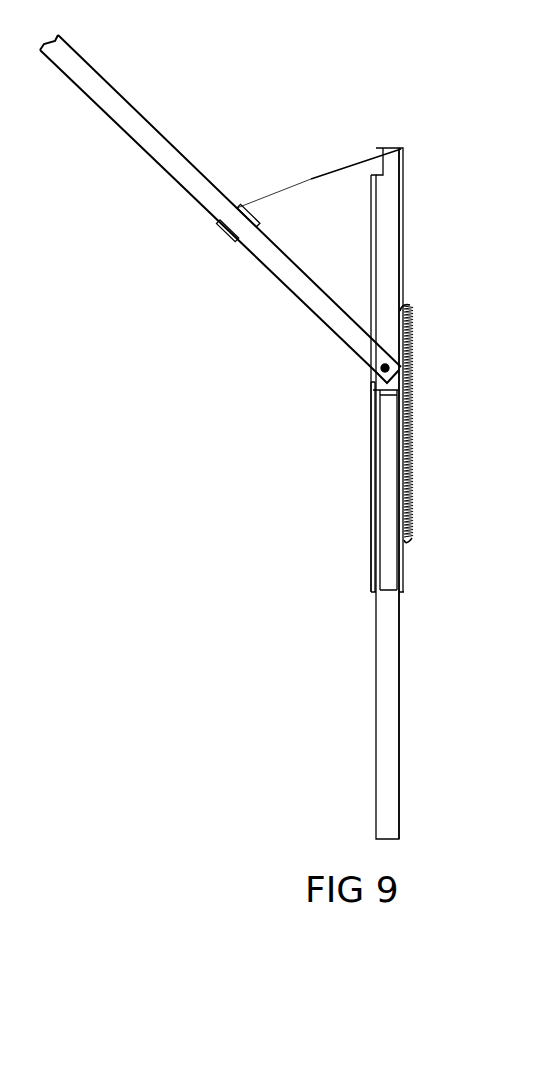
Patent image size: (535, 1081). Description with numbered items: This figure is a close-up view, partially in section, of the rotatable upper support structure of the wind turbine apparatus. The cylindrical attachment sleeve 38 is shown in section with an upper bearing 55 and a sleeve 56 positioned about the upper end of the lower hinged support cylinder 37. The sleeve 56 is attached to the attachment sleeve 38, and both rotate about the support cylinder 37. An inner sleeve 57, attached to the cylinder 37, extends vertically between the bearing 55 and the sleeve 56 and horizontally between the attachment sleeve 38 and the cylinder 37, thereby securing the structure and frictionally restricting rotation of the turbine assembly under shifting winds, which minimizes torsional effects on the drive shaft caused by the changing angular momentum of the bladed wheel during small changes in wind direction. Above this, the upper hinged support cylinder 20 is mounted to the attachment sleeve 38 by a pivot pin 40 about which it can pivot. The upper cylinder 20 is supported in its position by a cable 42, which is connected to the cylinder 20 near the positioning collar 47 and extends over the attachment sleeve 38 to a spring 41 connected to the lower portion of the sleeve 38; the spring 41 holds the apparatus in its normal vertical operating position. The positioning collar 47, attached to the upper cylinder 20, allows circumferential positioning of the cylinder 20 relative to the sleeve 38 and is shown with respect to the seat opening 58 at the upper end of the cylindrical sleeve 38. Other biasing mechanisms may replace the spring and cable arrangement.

The upper hinged support cylinder 20 is at (126, 98).
The cable 42 is at (311, 178).
The seat opening 58 is at (380, 150).
The positioning collar 47 is at (223, 232).
The pivot pin 40 is at (381, 368).
The upper bearing 55 is at (373, 394).
The spring 41 is at (403, 468).
The hinged attachment sleeve 38 is at (368, 518).
The inner sleeve 57 is at (375, 537).
The sleeve 56 is at (370, 570).
The lower hinged support cylinder 37 is at (385, 702).